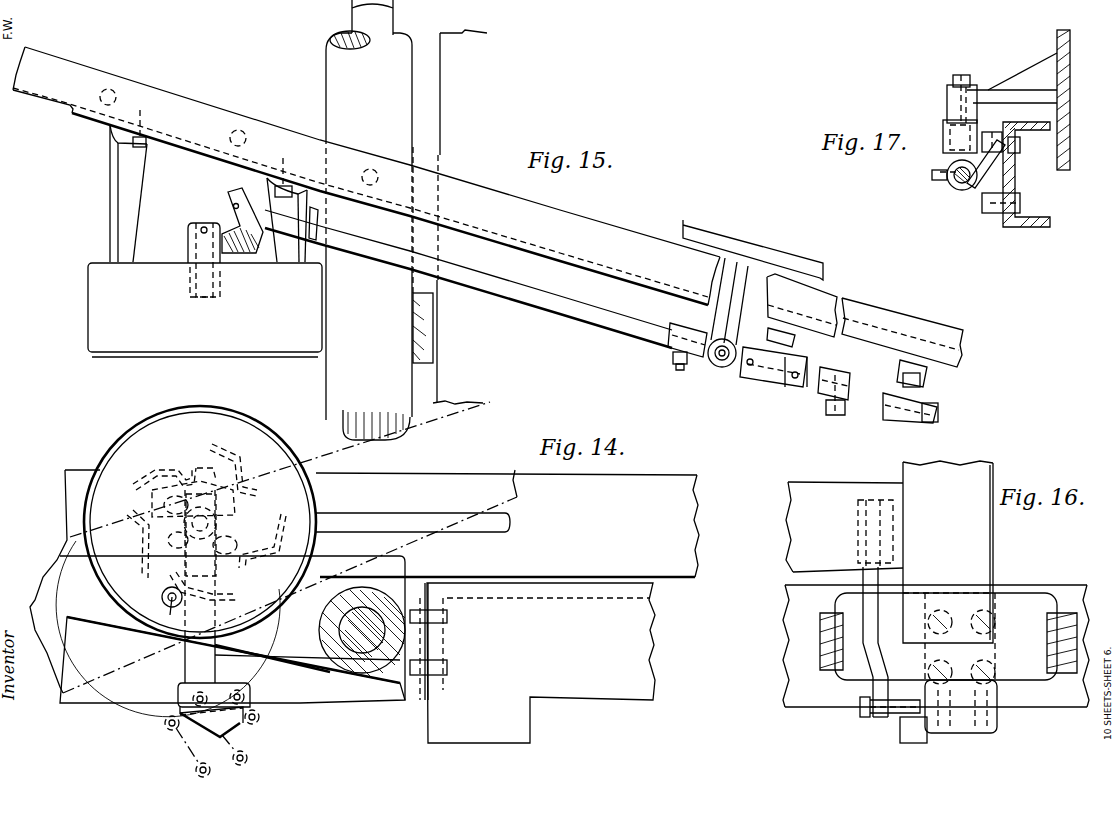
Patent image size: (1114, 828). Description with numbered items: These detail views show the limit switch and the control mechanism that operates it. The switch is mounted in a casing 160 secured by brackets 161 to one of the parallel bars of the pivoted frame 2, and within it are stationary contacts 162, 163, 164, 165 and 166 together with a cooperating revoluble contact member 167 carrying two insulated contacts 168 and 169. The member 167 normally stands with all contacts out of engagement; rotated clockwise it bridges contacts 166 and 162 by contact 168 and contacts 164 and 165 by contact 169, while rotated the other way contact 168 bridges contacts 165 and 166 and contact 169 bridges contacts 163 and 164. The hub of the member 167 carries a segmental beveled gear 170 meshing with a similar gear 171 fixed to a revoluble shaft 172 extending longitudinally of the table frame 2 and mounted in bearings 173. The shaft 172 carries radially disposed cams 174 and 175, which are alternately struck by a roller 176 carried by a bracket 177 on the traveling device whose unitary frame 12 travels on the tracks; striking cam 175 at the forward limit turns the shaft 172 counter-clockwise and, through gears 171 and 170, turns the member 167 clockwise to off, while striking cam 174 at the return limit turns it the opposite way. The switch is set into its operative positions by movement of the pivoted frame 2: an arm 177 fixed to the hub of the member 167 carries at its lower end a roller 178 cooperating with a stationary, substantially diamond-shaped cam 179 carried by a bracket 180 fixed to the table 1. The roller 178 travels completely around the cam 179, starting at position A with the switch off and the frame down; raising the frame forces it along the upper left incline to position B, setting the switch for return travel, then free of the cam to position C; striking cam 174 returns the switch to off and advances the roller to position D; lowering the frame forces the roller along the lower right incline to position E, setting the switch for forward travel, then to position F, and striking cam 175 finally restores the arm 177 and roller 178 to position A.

In FIG. 15, the table 1 is at (437, 386).
In FIG. 14, the table 1 is at (364, 606).
In FIG. 16, the table 1 is at (810, 700).
In FIG. 15, the frame 2 is at (578, 227).
In FIG. 17, the frame 2 is at (1017, 183).
In FIG. 17, the unitary frame 12 is at (1078, 100).
In FIG. 15, the casing 160 is at (205, 310).
In FIG. 14, the casing 160 is at (147, 430).
In FIG. 16, the casing 160 is at (949, 572).
In FIG. 15, the brackets 161 is at (110, 200).
In FIG. 16, the brackets 161 is at (844, 527).
In FIG. 14, the stationary contact 162 is at (246, 470).
In FIG. 14, the stationary contact 163 is at (252, 562).
In FIG. 14, the stationary contact 164 is at (188, 600).
In FIG. 14, the stationary contact 165 is at (136, 533).
In FIG. 14, the stationary contact 166 is at (183, 470).
In FIG. 14, the revoluble contact member 167 is at (228, 518).
In FIG. 14, the insulated contact 168 is at (203, 468).
In FIG. 14, the insulated contact 169 is at (178, 555).
In FIG. 15, the segmental beveled gear 170 is at (190, 240).
In FIG. 15, the beveled gear 171 is at (232, 193).
In FIG. 15, the revoluble shaft 172 is at (527, 297).
In FIG. 17, the revoluble shaft 172 is at (967, 183).
In FIG. 14, the revoluble shaft 172 is at (512, 528).
In FIG. 15, the bearings 173 is at (783, 357).
In FIG. 15, the cam 174 is at (675, 355).
In FIG. 17, the cam 174 is at (1002, 166).
In FIG. 15, the cam 175 is at (838, 407).
In FIG. 17, the cam 175 is at (943, 148).
In FIG. 15, the roller 176 is at (730, 367).
In FIG. 17, the roller 176 is at (947, 120).
In FIG. 15, the bracket / arm 177 is at (720, 307).
In FIG. 17, the bracket / arm 177 is at (1028, 80).
In FIG. 14, the bracket / arm 177 is at (190, 660).
In FIG. 16, the bracket / arm 177 is at (870, 610).
In FIG. 14, the roller 178 is at (205, 695).
In FIG. 16, the roller 178 is at (898, 717).
In FIG. 14, the stationary cam 179 is at (230, 735).
In FIG. 16, the stationary cam 179 is at (923, 743).
In FIG. 14, the bracket 180 is at (390, 700).
In FIG. 16, the bracket 180 is at (995, 710).
In FIG. 14, the position A is at (190, 697).
In FIG. 14, the position B is at (165, 725).
In FIG. 14, the position C is at (198, 777).
In FIG. 14, the position D is at (248, 762).
In FIG. 14, the position E is at (262, 718).
In FIG. 14, the position F is at (244, 690).